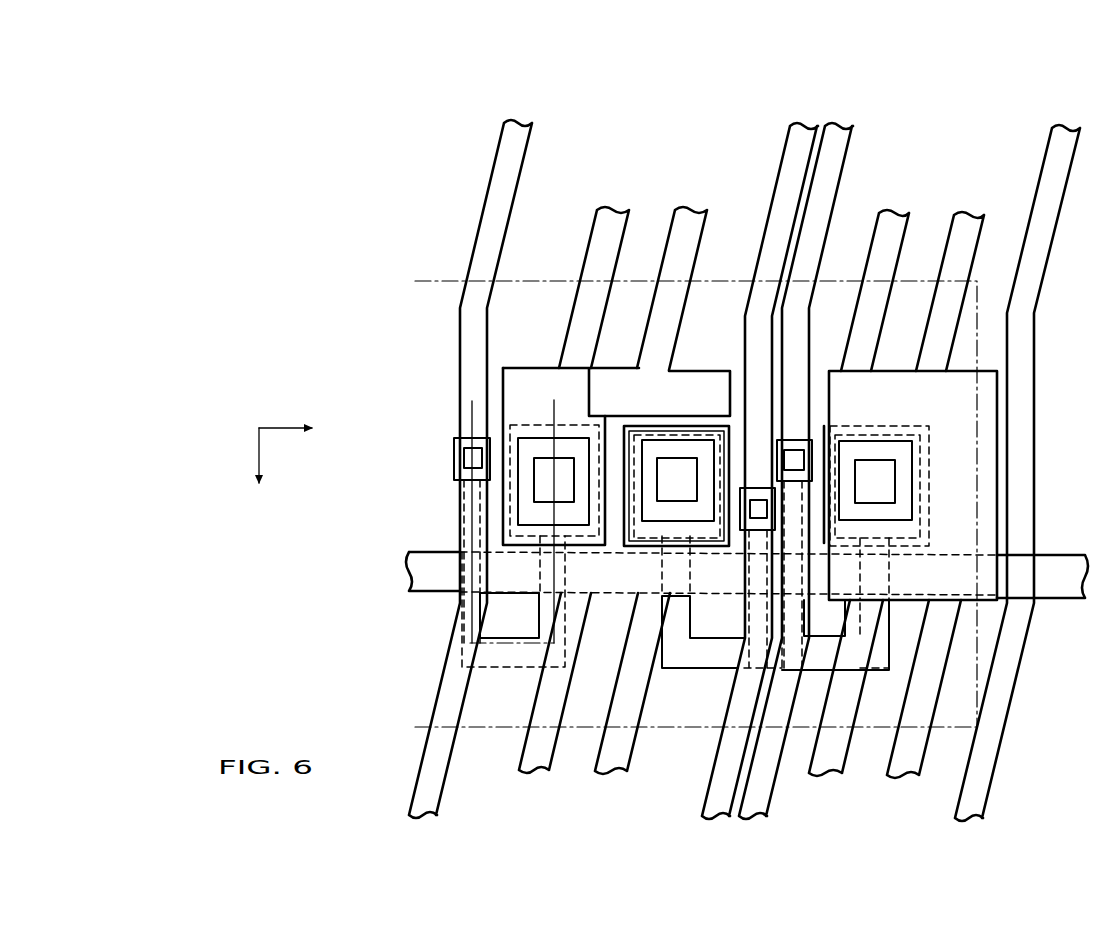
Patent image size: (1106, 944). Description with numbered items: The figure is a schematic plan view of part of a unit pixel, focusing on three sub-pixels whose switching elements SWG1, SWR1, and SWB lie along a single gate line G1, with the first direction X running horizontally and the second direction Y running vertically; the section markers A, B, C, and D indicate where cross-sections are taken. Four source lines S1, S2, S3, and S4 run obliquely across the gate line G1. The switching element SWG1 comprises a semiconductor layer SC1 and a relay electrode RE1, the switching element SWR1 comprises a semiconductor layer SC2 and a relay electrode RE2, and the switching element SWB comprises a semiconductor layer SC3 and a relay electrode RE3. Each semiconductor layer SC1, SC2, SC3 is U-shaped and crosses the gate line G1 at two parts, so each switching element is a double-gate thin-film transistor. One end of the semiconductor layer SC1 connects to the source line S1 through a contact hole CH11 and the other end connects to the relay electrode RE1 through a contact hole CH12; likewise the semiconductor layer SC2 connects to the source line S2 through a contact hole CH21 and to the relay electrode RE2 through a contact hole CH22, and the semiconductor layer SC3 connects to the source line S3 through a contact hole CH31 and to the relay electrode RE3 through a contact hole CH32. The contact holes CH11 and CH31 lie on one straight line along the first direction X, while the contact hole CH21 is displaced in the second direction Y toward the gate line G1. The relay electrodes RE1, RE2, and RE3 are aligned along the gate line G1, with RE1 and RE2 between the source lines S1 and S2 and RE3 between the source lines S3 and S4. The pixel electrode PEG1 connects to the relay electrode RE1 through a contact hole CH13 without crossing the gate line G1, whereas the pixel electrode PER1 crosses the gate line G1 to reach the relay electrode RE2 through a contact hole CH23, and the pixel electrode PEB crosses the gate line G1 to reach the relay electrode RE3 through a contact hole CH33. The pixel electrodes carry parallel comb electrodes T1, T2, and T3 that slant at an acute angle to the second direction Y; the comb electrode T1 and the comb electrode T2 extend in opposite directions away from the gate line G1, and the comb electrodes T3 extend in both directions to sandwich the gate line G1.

The source line S1 is at (522, 117).
The source line S2 is at (802, 119).
The source line S3 is at (836, 119).
The source line S4 is at (1066, 120).
The gate line G1 is at (407, 569).
The pixel electrode PEG1 is at (616, 278).
The pixel electrode PEB is at (903, 468).
The pixel electrode PER1 is at (593, 718).
The comb electrode T1 is at (658, 270).
The comb electrode T2 is at (627, 640).
The comb electrode T3 is at (938, 272).
The relay electrode RE1 is at (503, 440).
The relay electrode RE2 is at (630, 425).
The relay electrode RE3 is at (818, 535).
The contact hole CH11 is at (458, 453).
The contact hole CH12 is at (534, 472).
The contact hole CH13 is at (540, 447).
The contact hole CH21 is at (757, 518).
The contact hole CH22 is at (678, 457).
The contact hole CH23 is at (710, 437).
The contact hole CH31 is at (790, 447).
The contact hole CH32 is at (880, 457).
The contact hole CH33 is at (908, 448).
The semiconductor layer SC1 is at (493, 666).
The semiconductor layer SC2 is at (666, 666).
The semiconductor layer SC3 is at (882, 667).
The switching element SWG1 is at (450, 606).
The switching element SWR1 is at (708, 672).
The switching element SWB is at (812, 670).
The section line end A is at (509, 507).
The section line end B is at (553, 507).
The section line C is at (687, 496).
The section line D is at (686, 723).
The first direction X is at (298, 423).
The second direction Y is at (257, 468).